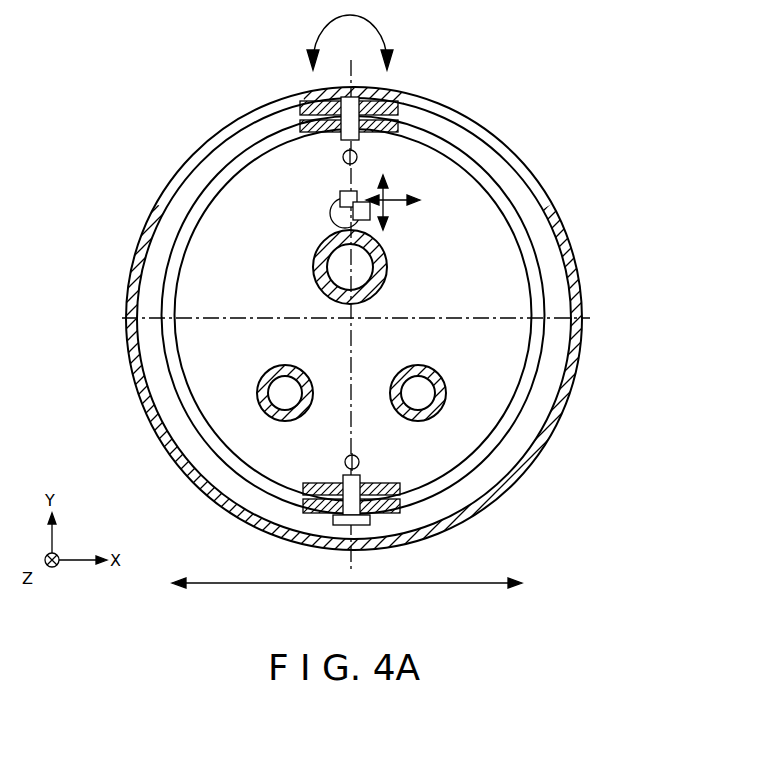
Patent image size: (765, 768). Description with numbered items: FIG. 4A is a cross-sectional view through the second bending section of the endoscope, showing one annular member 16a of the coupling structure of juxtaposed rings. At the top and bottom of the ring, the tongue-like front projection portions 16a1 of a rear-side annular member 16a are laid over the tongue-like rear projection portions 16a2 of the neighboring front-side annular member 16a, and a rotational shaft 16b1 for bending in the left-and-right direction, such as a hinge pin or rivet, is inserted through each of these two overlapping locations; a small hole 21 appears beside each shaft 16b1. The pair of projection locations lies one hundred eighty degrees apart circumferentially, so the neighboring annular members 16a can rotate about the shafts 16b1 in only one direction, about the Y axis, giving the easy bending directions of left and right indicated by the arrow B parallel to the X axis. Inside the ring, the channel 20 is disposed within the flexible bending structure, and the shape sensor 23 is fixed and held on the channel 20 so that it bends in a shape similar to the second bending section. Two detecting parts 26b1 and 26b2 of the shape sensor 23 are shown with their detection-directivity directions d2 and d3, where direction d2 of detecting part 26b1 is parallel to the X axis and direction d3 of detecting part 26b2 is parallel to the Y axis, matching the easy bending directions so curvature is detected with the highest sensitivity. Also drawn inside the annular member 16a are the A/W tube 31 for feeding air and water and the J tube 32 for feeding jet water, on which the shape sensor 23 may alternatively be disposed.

The annular member 16a is at (521, 182).
The front projection portion 16a1 is at (300, 118).
The rear projection portion 16a2 is at (404, 112).
The rotational shaft for bending in the left-and-right direction 16b1 is at (355, 136).
The hole 21 is at (343, 157).
The shape sensor 23 is at (332, 216).
The detecting part 26b1 is at (340, 200).
The detecting part 26b2 is at (370, 222).
The channel 20 is at (314, 272).
The A/W tube 31 is at (266, 374).
The J tube 32 is at (442, 374).
The detection-directivity direction d2 is at (392, 208).
The detection-directivity direction d3 is at (392, 197).
The arrow indicating left and right directions B is at (347, 601).